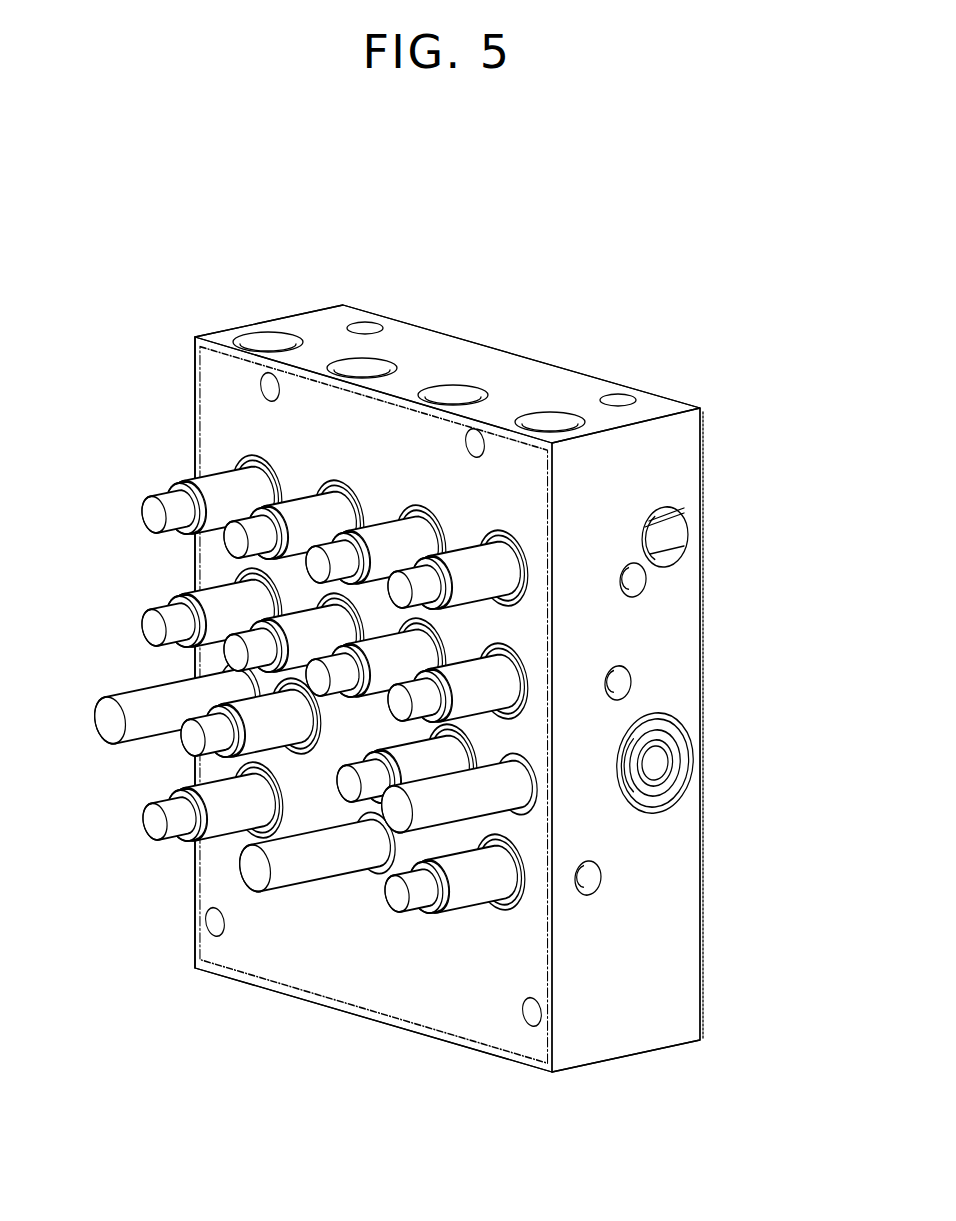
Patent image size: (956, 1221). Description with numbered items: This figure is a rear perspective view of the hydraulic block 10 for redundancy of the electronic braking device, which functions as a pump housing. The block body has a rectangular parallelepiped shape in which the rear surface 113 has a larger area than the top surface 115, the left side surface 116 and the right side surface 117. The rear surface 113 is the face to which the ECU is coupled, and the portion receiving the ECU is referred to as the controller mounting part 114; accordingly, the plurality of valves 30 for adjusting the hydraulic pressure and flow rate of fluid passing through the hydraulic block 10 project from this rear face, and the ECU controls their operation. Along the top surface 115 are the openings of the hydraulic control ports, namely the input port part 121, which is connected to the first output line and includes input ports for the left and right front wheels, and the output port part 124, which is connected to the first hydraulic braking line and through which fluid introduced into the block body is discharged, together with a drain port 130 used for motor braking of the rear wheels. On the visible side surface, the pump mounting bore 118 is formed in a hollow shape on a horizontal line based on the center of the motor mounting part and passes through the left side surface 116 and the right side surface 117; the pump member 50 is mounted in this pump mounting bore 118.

The hydraulic block 10 is at (628, 378).
The valve 30 is at (187, 622).
The pump member 50 is at (665, 762).
The rear surface 113 is at (342, 978).
The controller mounting part 114 is at (200, 430).
The top surface 115 is at (453, 352).
The left side surface 116 is at (672, 617).
The right side surface 117 is at (192, 878).
The pump mounting bore 118 is at (673, 725).
The input port part 121 is at (365, 368).
The output port part 124 is at (263, 343).
The drain port 130 is at (455, 392).